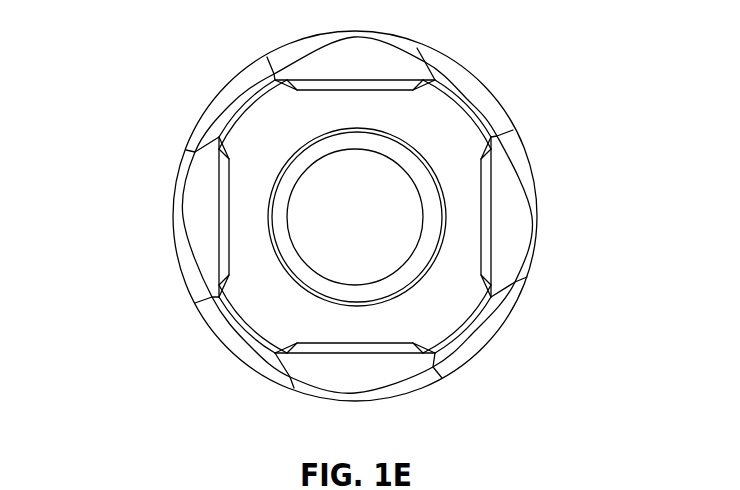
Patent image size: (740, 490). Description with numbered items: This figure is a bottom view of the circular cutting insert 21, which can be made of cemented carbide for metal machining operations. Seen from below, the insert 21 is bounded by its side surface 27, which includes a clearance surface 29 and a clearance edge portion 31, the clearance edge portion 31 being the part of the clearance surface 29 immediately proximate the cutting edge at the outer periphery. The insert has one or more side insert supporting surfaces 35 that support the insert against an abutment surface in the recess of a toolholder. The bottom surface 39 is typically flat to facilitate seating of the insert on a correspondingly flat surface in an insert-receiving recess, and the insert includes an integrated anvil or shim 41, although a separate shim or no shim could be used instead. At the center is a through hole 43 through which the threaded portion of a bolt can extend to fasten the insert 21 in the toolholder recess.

The cutting insert 21 is at (368, 216).
The side surface 27 is at (531, 303).
The clearance surface 29 is at (541, 188).
The clearance edge portion 31 is at (525, 163).
The side insert supporting surface 35 is at (507, 220).
The bottom surface 39 is at (265, 147).
The integrated anvil or shim 41 is at (224, 202).
The through hole 43 is at (340, 238).